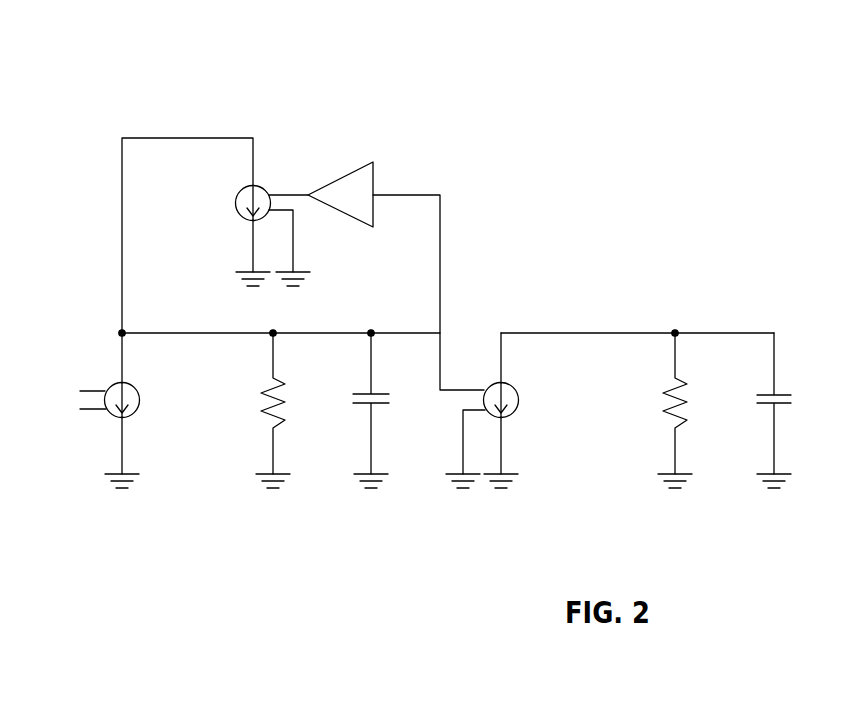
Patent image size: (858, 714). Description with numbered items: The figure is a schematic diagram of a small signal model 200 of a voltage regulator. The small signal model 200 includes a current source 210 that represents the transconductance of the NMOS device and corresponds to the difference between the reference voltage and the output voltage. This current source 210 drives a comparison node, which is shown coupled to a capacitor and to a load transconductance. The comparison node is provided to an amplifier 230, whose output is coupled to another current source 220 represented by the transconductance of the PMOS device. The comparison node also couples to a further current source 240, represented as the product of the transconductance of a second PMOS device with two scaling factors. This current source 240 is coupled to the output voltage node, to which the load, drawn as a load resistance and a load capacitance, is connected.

The small signal model 200 is at (134, 57).
The current source 210 is at (141, 398).
The current source 220 is at (236, 205).
The amplifier 230 is at (348, 216).
The current source 240 is at (520, 397).